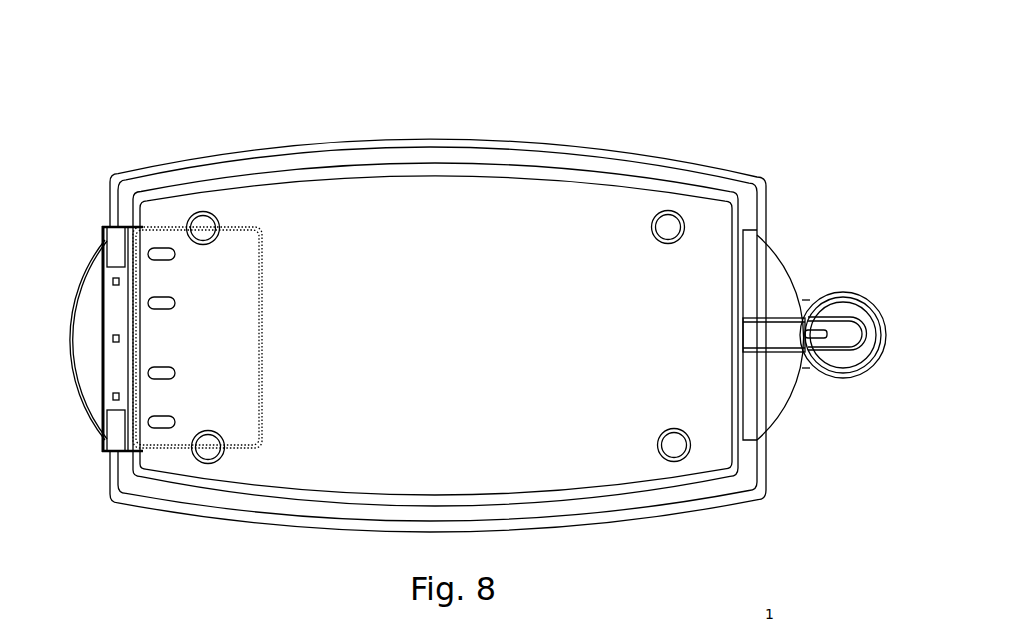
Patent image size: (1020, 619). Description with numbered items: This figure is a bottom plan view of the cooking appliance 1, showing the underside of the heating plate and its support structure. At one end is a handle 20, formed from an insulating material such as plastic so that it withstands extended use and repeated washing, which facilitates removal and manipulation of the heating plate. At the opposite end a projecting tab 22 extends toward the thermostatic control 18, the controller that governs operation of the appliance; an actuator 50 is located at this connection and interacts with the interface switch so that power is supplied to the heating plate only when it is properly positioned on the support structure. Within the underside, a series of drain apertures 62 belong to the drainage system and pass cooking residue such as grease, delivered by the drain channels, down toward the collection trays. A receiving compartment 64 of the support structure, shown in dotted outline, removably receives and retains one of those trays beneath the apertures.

The cooking appliance 1 is at (692, 76).
The thermostatic control 18 is at (840, 292).
The handle 20 is at (78, 285).
The tab 22 is at (792, 342).
The actuator 50 is at (827, 336).
The drain apertures 62 is at (155, 373).
The receiving compartments 64 is at (230, 258).